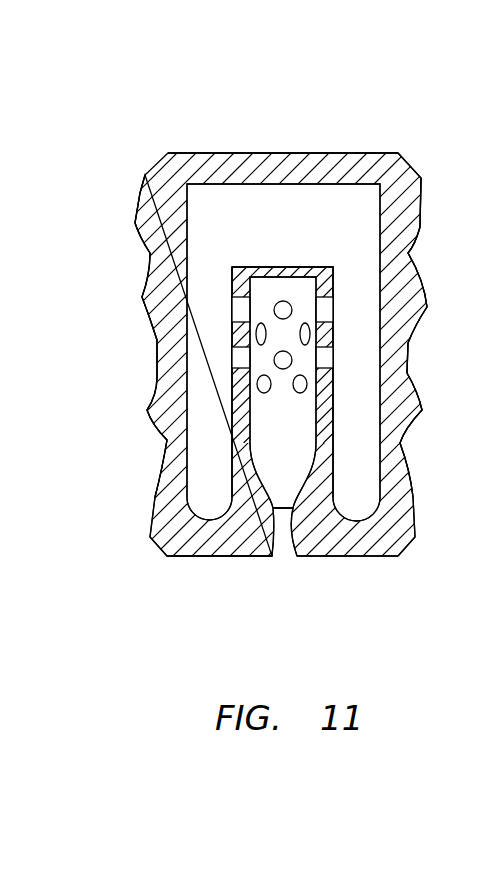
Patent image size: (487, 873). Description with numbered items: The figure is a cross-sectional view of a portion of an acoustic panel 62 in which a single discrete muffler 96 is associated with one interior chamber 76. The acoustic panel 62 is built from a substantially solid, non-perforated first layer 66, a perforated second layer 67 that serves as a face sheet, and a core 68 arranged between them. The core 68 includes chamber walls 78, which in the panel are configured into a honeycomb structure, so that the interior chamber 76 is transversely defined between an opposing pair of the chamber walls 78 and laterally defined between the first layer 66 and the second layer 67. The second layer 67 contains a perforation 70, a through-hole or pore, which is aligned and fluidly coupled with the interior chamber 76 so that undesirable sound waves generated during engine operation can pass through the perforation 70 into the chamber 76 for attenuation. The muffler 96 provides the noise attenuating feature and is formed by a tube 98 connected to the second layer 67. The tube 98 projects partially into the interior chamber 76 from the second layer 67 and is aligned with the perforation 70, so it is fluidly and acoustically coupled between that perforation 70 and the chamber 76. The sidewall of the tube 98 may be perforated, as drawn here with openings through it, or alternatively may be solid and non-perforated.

The acoustic panel 62 is at (399, 92).
The first layer 66 is at (270, 152).
The second layer 67 is at (187, 559).
The core 68 is at (146, 465).
The perforation 70 is at (281, 545).
The interior chamber 76 is at (292, 230).
The chamber wall 78 is at (170, 298).
The muffler 96 is at (340, 392).
The tube 98 is at (323, 421).